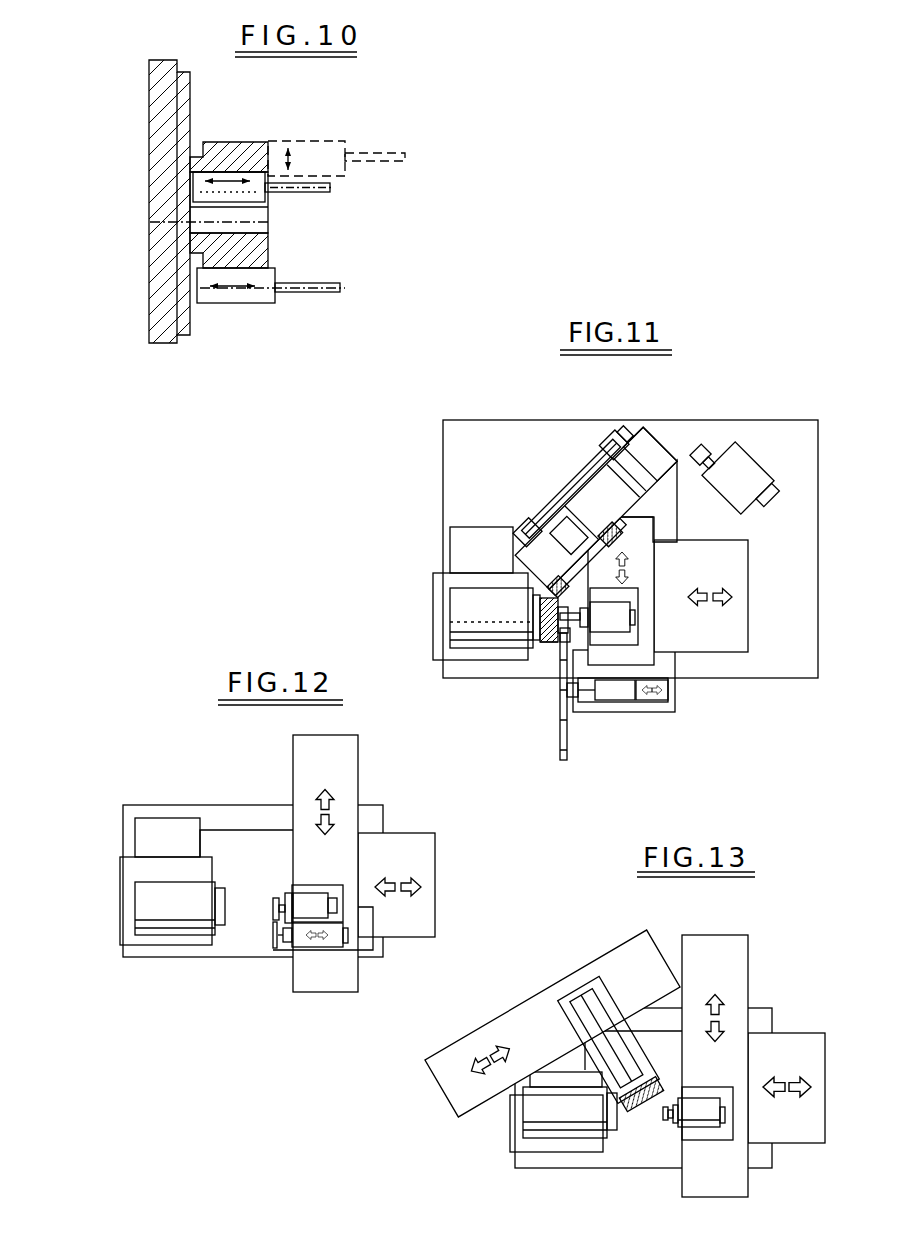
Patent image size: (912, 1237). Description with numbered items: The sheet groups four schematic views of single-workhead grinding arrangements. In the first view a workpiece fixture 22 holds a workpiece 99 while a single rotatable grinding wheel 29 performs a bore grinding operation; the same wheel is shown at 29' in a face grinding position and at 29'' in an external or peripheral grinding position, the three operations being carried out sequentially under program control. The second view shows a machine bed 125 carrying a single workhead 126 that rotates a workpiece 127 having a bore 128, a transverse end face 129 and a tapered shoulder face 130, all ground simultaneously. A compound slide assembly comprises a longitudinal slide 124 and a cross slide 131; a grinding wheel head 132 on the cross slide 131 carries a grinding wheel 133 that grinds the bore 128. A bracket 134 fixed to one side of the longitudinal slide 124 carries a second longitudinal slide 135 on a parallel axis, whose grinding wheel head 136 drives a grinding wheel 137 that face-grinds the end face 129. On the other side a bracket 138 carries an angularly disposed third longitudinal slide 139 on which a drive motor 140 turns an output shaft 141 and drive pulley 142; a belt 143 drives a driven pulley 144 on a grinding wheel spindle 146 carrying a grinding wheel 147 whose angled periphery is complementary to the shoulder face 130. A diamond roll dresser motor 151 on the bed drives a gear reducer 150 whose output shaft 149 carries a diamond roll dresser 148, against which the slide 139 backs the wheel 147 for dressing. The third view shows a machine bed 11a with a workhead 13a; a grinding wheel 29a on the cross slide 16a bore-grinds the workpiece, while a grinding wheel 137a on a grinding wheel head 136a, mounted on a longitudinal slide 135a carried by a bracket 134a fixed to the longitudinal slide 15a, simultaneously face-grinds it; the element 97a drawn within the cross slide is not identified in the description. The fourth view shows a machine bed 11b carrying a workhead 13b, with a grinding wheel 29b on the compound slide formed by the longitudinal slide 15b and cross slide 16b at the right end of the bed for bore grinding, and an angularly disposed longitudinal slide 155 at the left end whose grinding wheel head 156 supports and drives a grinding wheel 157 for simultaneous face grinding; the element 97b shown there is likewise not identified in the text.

In FIG. 10, the workpiece fixture 22 is at (168, 330).
In FIG. 10, the workpiece 99 is at (246, 141).
In FIG. 10, the rotatable grinding wheel 29 is at (265, 205).
In FIG. 10, the grinding wheel in face grinding position 29' is at (336, 145).
In FIG. 10, the grinding wheel in external grinding position 29'' is at (271, 310).
In FIG. 11, the longitudinal slide 124 is at (737, 628).
In FIG. 11, the grinding machine bed 125 is at (793, 673).
In FIG. 11, the workhead 126 is at (463, 603).
In FIG. 11, the workpiece 127 is at (537, 642).
In FIG. 11, the bore 128 is at (540, 618).
In FIG. 11, the transverse end face 129 is at (570, 638).
In FIG. 11, the tapered shoulder face 130 is at (530, 565).
In FIG. 11, the cross slide 131 is at (647, 565).
In FIG. 11, the grinding wheel head 132 is at (627, 627).
In FIG. 11, the grinding wheel 133 is at (537, 635).
In FIG. 11, the bracket 134 is at (677, 668).
In FIG. 11, the second longitudinal slide 135 is at (658, 703).
In FIG. 11, the grinding wheel head 136 is at (618, 697).
In FIG. 11, the grinding wheel 137 is at (560, 740).
In FIG. 11, the bracket 138 is at (677, 522).
In FIG. 11, the third longitudinal slide 139 is at (655, 452).
In FIG. 11, the drive motor 140 is at (635, 455).
In FIG. 11, the output shaft 141 is at (612, 450).
In FIG. 11, the drive pulley 142 is at (610, 437).
In FIG. 11, the belt 143 is at (575, 480).
In FIG. 11, the driven pulley 144 is at (540, 515).
In FIG. 11, the grinding wheel spindle 146 is at (563, 533).
In FIG. 11, the grinding wheel 147 is at (630, 515).
In FIG. 11, the diamond roll dresser 148 is at (703, 450).
In FIG. 11, the output shaft 149 is at (707, 457).
In FIG. 11, the gear reducer 150 is at (740, 450).
In FIG. 11, the diamond roll dresser motor 151 is at (760, 485).
In FIG. 12, the machine bed 11a is at (393, 812).
In FIG. 12, the workhead 13a is at (177, 912).
In FIG. 12, the longitudinal slide 15a is at (440, 860).
In FIG. 12, the cross slide 16a is at (365, 742).
In FIG. 12, the rotatable grinding wheel 29a is at (275, 900).
In FIG. 12, the drive motor 97a is at (313, 900).
In FIG. 12, the bracket 134a is at (363, 922).
In FIG. 12, the longitudinal slide 135a is at (350, 937).
In FIG. 12, the grinding wheel head 136a is at (337, 947).
In FIG. 12, the rotatable grinding wheel 137a is at (273, 945).
In FIG. 13, the machine bed 11b is at (763, 1005).
In FIG. 13, the workhead 13b is at (563, 1123).
In FIG. 13, the longitudinal slide 15b is at (803, 1032).
In FIG. 13, the cross slide 16b is at (728, 955).
In FIG. 13, the rotatable grinding wheel 29b is at (665, 1107).
In FIG. 13, the drive motor 97b is at (698, 1108).
In FIG. 13, the angularly disposed longitudinal slide 155 is at (580, 968).
In FIG. 13, the grinding wheel head 156 is at (612, 1015).
In FIG. 13, the rotatable grinding wheel 157 is at (627, 1098).